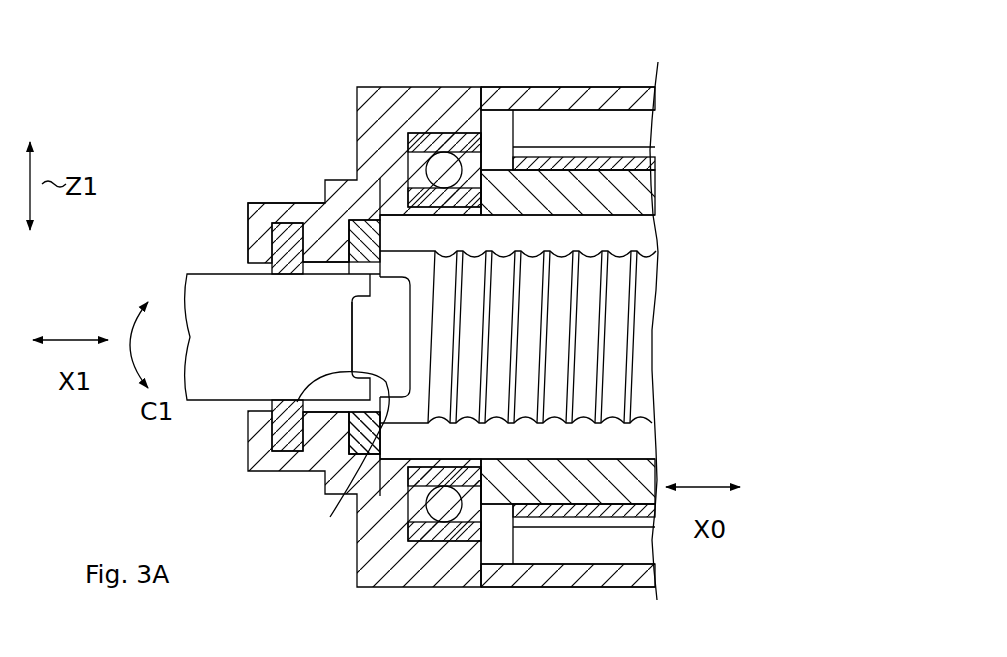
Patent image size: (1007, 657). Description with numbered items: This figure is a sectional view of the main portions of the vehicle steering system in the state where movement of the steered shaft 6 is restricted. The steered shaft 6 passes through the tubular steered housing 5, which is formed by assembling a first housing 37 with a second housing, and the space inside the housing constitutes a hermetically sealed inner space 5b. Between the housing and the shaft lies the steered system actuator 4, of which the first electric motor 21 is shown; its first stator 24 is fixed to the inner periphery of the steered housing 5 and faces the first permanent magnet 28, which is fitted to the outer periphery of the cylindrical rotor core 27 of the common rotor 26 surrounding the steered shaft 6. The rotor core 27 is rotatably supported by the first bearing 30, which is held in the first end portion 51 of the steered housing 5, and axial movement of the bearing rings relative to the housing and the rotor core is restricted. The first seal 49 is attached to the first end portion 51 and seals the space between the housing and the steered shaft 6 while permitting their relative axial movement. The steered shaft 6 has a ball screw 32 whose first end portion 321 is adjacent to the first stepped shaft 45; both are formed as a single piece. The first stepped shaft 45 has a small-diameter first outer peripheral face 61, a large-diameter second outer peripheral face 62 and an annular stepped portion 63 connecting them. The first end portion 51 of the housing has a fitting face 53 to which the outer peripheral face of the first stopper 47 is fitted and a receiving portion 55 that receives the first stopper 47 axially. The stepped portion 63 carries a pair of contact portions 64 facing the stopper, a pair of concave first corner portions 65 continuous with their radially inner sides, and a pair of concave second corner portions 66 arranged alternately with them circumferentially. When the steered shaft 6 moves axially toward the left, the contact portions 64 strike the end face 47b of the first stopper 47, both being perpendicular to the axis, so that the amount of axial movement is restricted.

The steered system actuator 4 is at (540, 103).
The steered housing 5 is at (510, 86).
The inner space 5b is at (395, 182).
The steered shaft 6 is at (205, 272).
The first electric motor 21 is at (612, 104).
The first stator 24 is at (585, 127).
The rotor 26 is at (653, 185).
The rotor core 27 is at (645, 203).
The first permanent magnet 28 is at (628, 143).
The first bearing 30 is at (443, 167).
The ball screw 32 is at (652, 330).
The first housing 37 is at (602, 578).
The first stepped shaft 45 is at (408, 427).
The first stopper 47 is at (373, 248).
The end face 47b is at (345, 372).
The first seal 49 is at (285, 230).
The first end portion 51 is at (255, 203).
The fitting face 53 is at (348, 235).
The receiving portion 55 is at (353, 265).
The first outer peripheral face 61 is at (351, 252).
The second outer peripheral face 62 is at (343, 459).
The stepped portion 63 is at (250, 460).
The contact portions 64 is at (352, 440).
The first corner portions 65 is at (332, 422).
The second corner portions 66 is at (283, 420).
The first end portion 321 is at (432, 412).